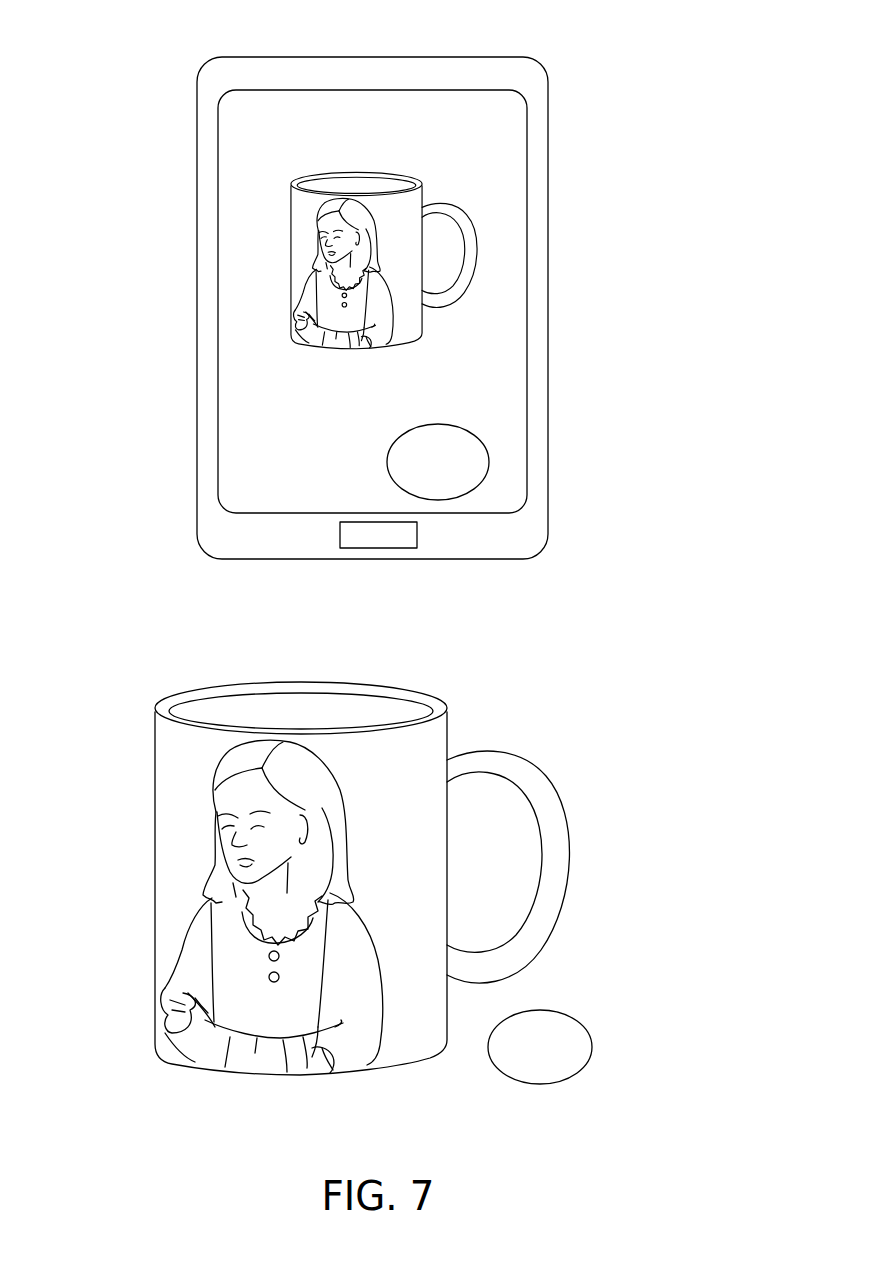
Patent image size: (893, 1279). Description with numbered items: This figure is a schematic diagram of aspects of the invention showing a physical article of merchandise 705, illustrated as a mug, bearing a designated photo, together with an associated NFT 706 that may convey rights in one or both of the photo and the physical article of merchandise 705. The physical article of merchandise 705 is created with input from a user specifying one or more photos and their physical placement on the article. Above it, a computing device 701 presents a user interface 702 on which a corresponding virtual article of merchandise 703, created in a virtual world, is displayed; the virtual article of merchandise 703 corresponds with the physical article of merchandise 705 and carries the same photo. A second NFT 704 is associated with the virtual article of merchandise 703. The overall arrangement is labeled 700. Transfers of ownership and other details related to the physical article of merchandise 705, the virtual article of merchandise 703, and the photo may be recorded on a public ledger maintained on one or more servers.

The NFT display and transfer system 700 is at (205, 30).
The computing device 701 is at (173, 137).
The user interface 702 is at (372, 301).
The virtual article of merchandise 703 is at (268, 260).
The second NFT 704 is at (505, 462).
The physical article of merchandise 705 is at (362, 878).
The NFT 706 is at (605, 1047).